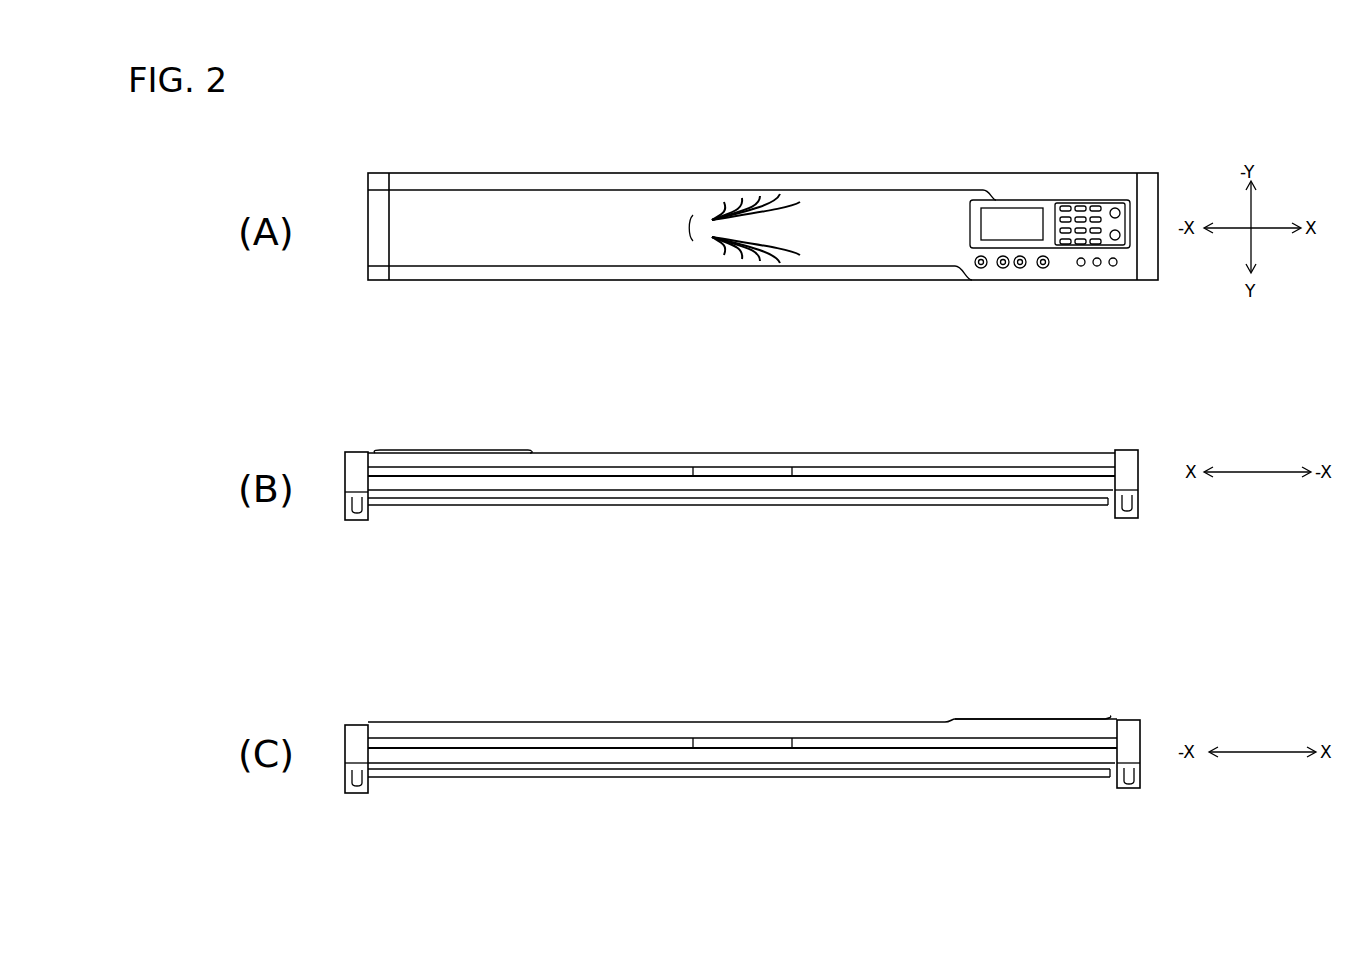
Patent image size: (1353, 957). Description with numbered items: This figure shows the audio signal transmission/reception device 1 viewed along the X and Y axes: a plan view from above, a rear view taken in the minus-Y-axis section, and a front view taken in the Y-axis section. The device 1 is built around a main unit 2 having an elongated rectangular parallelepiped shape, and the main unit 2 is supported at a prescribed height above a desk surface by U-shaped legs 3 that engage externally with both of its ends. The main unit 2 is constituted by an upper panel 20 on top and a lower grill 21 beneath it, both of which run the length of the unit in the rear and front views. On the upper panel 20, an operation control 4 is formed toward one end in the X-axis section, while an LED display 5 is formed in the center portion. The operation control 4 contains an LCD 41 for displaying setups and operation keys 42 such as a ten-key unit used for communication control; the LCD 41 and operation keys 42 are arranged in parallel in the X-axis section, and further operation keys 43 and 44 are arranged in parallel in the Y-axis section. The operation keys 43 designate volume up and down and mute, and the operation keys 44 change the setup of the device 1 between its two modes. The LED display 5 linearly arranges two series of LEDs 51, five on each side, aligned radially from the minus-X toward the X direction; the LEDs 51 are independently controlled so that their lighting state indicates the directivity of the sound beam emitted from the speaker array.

The audio signal transmission/reception device 1 is at (462, 290).
The main unit 2 is at (411, 260).
The legs 3 is at (375, 220).
The operation control 4 is at (517, 450).
The LED display 5 is at (683, 228).
The LEDs 51 is at (746, 228).
The upper panel 20 is at (527, 210).
The lower grill 21 is at (950, 492).
The LCD 41 is at (1012, 220).
The operation keys 42 is at (1080, 198).
The operation keys 43 is at (1000, 272).
The operation keys 44 is at (1097, 272).